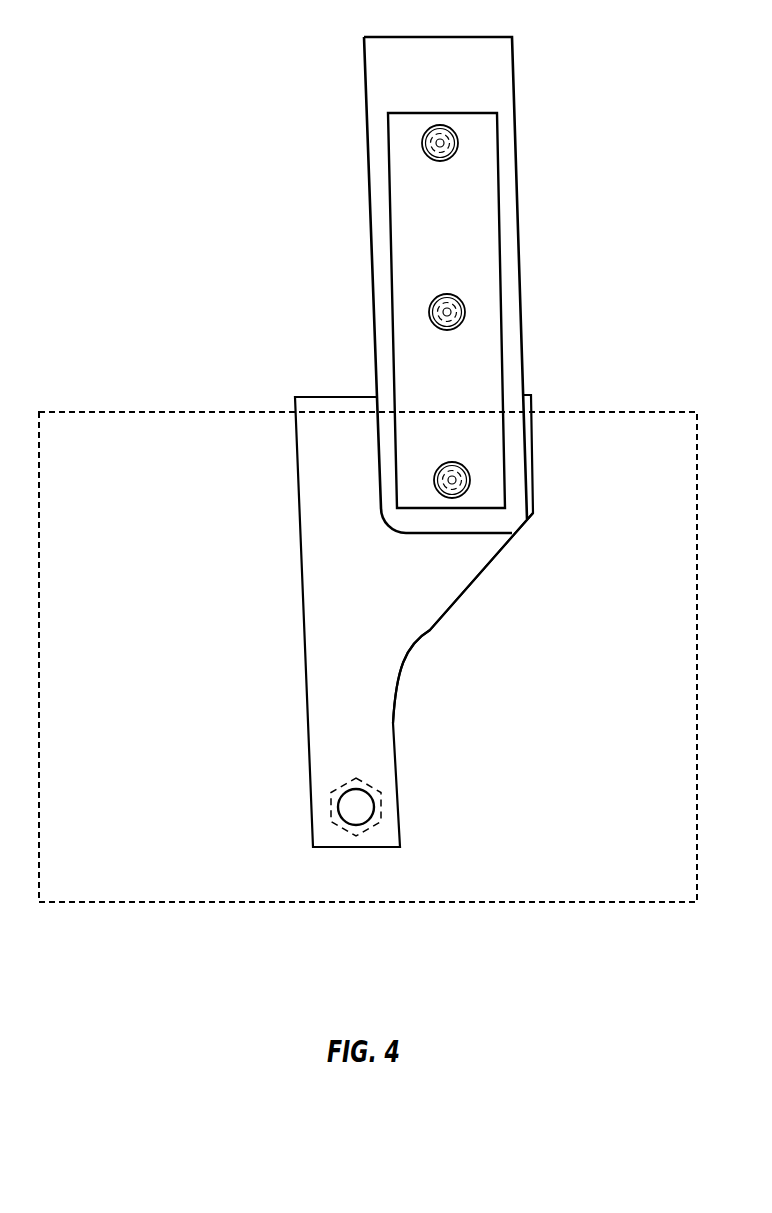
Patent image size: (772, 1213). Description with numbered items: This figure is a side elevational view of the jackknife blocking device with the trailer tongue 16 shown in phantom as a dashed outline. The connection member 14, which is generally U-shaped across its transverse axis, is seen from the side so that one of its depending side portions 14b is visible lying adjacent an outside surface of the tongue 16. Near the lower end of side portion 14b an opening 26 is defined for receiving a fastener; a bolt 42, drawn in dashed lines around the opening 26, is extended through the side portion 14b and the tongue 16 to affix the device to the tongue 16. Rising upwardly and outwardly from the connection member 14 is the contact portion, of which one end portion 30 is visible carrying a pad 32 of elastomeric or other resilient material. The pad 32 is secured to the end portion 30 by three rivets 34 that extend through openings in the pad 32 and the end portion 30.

The connection member 14 is at (262, 607).
The side portion 14b is at (460, 560).
The trailer tongue 16 is at (203, 884).
The opening 26 is at (347, 805).
The end portion 30 is at (495, 72).
The pad 32 is at (485, 188).
The rivet 34 is at (422, 143).
The bolt 42 is at (390, 788).